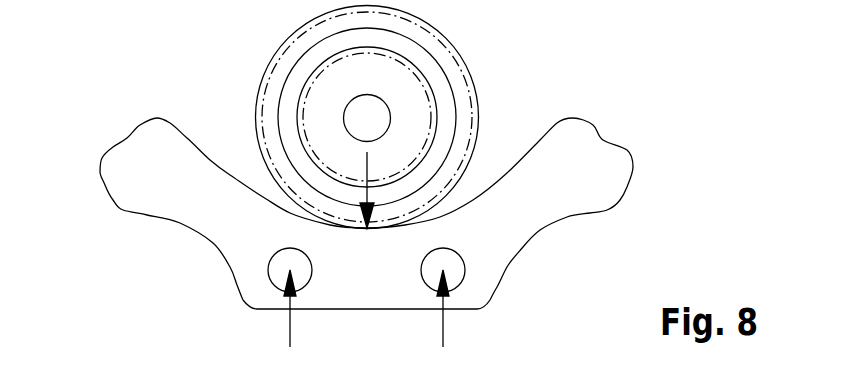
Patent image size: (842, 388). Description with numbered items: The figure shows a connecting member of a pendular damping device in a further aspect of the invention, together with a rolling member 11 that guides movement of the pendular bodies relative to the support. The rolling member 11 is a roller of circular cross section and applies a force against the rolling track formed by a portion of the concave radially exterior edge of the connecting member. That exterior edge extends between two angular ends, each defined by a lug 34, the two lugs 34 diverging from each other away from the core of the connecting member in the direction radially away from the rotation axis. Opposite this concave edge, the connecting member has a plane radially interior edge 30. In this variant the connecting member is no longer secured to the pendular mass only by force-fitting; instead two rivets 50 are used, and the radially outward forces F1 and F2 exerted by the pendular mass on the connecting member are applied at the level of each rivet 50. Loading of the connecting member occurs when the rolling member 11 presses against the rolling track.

The rolling member 11 is at (453, 72).
The lug 34 is at (143, 172).
The plane radially interior edge 30 is at (340, 310).
The rivet 50 is at (280, 265).
The force F1 is at (287, 323).
The force F2 is at (442, 323).